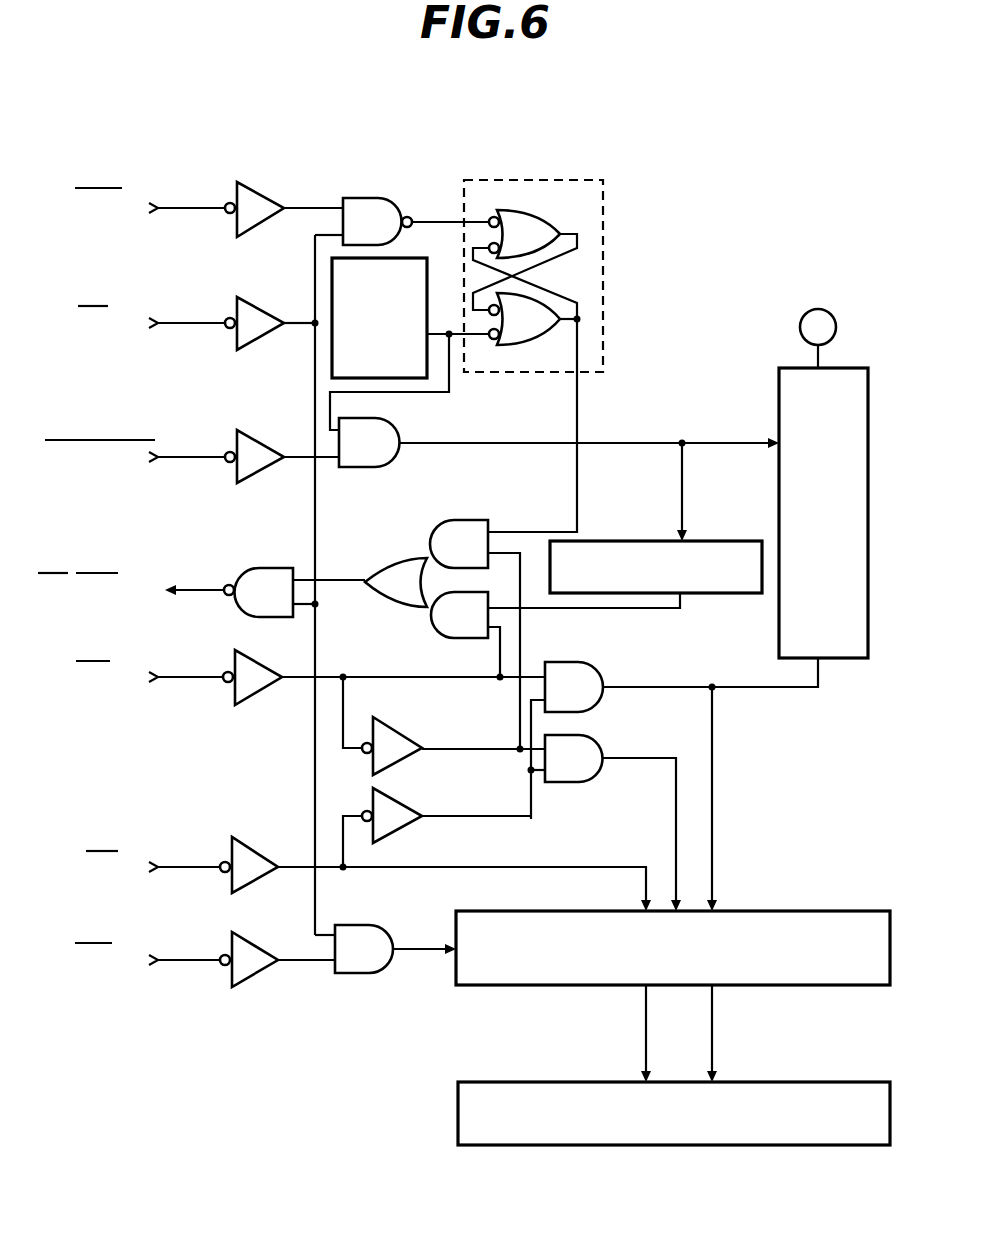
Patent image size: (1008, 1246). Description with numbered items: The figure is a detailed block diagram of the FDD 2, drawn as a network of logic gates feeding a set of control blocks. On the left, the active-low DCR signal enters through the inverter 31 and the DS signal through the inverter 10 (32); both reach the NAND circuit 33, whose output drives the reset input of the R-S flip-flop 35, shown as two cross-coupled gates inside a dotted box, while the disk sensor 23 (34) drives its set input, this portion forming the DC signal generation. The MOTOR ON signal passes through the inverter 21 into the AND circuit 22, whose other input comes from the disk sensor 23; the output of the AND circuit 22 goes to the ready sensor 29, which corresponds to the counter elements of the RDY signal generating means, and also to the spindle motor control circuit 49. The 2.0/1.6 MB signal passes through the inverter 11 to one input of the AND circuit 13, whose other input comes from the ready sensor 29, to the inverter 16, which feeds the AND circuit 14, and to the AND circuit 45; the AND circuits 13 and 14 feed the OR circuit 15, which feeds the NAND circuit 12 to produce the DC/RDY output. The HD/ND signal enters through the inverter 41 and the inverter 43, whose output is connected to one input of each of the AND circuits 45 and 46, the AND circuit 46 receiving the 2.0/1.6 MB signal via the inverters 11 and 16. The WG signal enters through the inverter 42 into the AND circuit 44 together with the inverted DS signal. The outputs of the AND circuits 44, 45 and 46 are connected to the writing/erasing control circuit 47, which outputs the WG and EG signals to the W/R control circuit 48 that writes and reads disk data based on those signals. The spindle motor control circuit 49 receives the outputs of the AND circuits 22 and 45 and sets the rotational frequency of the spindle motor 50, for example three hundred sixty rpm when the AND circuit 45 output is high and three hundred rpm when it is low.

The FDD 2 is at (462, 614).
The inverter 10 is at (234, 336).
The inverter 11 is at (257, 662).
The NAND circuit 12 is at (265, 567).
The AND circuit 13 is at (447, 519).
The AND circuit 14 is at (538, 636).
The OR circuit 15 is at (391, 557).
The inverter 16 is at (396, 731).
The inverter 21 is at (258, 441).
The AND circuit 22 is at (398, 419).
The disk sensor 23 is at (348, 338).
The ready sensor 29 is at (598, 541).
The inverter 31 is at (257, 192).
The inverter 32 is at (269, 352).
The NAND circuit 33 is at (371, 197).
The disk sensor 34 is at (332, 268).
The R-S flip-flop 35 is at (532, 181).
The inverter 41 is at (261, 852).
The inverter 42 is at (264, 930).
The inverter 43 is at (395, 800).
The AND circuit 44 is at (363, 923).
The AND circuit 45 is at (585, 661).
The AND circuit 46 is at (569, 783).
The writing/erasing control circuit 47 is at (770, 911).
The W/R control circuit 48 is at (790, 1081).
The spindle motor control circuit 49 is at (779, 415).
The spindle motor 50 is at (806, 311).